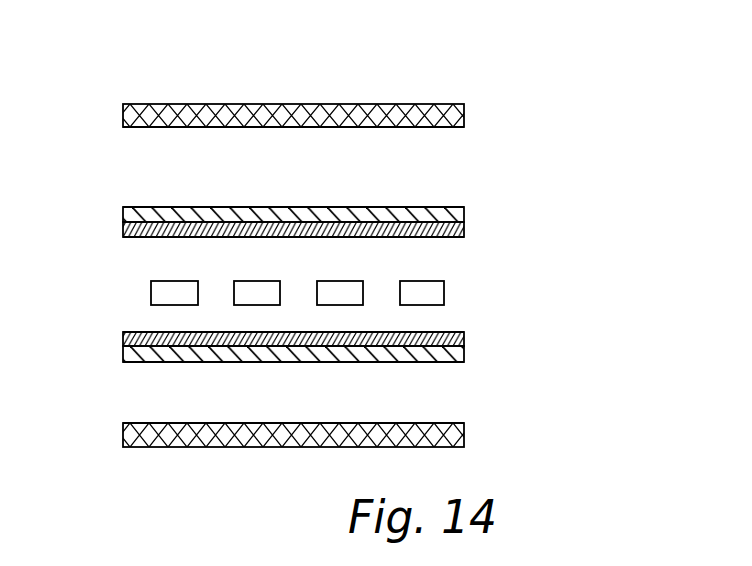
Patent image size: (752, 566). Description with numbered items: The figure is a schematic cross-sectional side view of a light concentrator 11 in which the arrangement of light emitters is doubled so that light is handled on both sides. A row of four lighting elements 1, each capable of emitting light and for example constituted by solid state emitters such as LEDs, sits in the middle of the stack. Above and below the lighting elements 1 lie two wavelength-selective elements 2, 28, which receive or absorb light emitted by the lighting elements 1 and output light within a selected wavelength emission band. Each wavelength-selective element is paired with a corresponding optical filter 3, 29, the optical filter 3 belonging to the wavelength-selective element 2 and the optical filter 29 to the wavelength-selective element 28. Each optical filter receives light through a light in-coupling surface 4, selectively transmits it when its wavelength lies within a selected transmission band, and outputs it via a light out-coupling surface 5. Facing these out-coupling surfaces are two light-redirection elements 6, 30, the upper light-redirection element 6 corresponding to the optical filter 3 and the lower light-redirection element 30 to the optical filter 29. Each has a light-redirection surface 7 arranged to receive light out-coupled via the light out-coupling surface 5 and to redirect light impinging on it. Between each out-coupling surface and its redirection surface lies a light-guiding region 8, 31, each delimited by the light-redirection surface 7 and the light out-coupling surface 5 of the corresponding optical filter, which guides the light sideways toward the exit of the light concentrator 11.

The lighting elements 1 is at (151, 293).
The wavelength-selective element 2 is at (237, 228).
The optical filter 3 is at (130, 215).
The light in-coupling surface 4 is at (133, 207).
The light out-coupling surface 5 is at (150, 237).
The light-redirection element 6 is at (191, 115).
The light-redirection surface 7 is at (270, 127).
The light-guiding region 8 is at (368, 152).
The light concentrator 11 is at (537, 100).
The wavelength-selective element 28 is at (127, 340).
The optical filter 29 is at (127, 354).
The light-redirection element 30 is at (215, 438).
The light-guiding region 31 is at (290, 383).